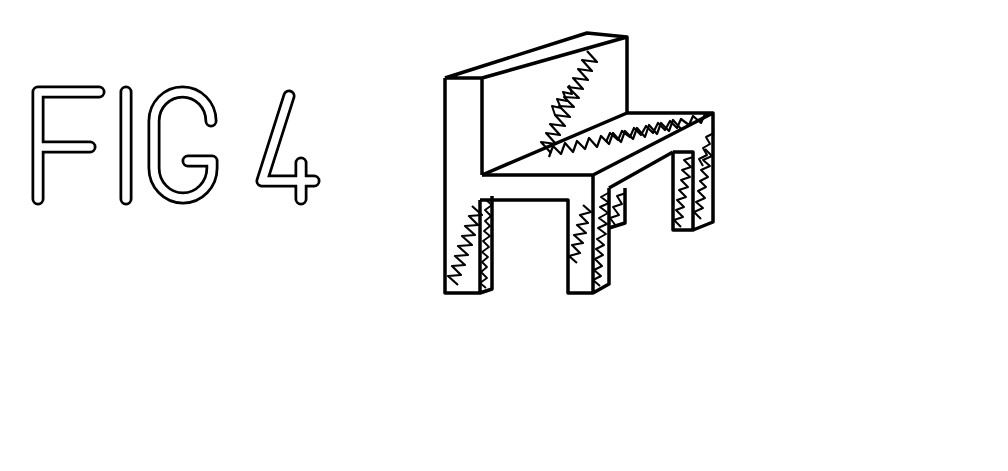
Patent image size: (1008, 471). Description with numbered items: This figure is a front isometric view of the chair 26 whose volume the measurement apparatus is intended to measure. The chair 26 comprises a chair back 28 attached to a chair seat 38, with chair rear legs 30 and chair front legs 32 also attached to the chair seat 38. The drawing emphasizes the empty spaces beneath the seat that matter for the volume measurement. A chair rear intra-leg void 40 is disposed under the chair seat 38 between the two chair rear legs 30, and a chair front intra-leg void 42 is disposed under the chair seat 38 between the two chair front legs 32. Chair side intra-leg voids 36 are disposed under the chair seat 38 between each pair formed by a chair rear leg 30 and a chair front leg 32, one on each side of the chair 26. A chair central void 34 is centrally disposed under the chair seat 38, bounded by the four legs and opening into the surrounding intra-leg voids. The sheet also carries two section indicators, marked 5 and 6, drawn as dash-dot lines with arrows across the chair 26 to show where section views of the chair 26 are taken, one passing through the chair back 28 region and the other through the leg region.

The chair 26 is at (789, 70).
The chair back 28 is at (478, 73).
The chair seat 38 is at (647, 122).
The chair rear legs 30 is at (445, 268).
The chair front legs 32 is at (588, 296).
The chair central void 34 is at (557, 270).
The chair side intra-leg voids 36 is at (516, 291).
The chair rear intra-leg void 40 is at (463, 295).
The chair front intra-leg void 42 is at (623, 268).
The section line 5- 5 is at (781, 236).
The section line 6- 6 is at (793, 168).